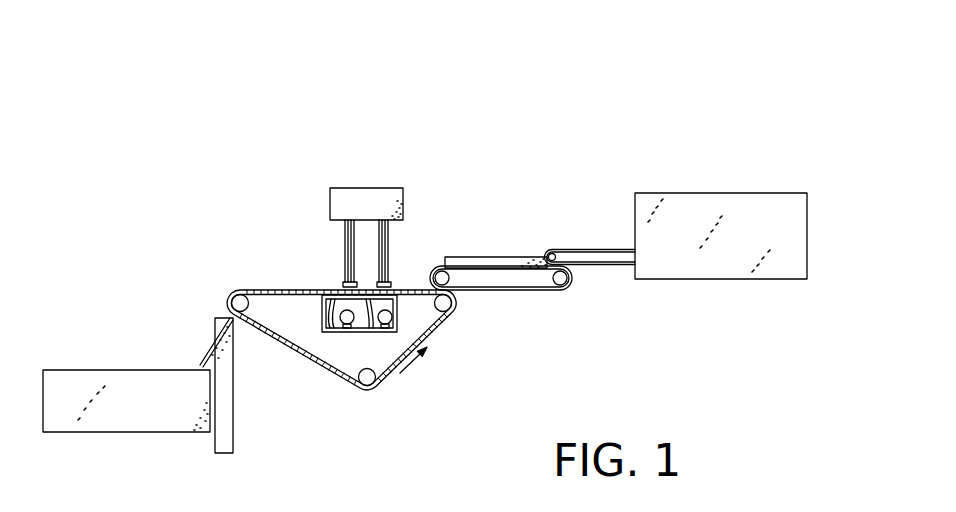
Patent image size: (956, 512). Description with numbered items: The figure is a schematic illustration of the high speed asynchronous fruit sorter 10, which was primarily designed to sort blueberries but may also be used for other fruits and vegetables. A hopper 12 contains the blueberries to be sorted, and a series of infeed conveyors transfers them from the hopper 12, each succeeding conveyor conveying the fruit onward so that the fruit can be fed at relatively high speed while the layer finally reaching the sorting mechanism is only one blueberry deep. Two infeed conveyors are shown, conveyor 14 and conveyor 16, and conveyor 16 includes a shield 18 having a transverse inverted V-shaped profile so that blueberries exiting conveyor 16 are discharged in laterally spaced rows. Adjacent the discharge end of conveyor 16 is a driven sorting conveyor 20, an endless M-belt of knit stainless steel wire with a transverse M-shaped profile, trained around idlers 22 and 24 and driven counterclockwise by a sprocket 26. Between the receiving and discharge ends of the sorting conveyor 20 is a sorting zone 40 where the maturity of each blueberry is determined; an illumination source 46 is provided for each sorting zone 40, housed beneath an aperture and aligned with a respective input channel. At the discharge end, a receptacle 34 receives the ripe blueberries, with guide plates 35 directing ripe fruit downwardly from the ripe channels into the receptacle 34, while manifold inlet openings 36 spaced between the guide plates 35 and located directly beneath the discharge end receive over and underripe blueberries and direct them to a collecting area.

The asynchronous fruit sorter 10 is at (470, 108).
The hopper 12 is at (799, 206).
The infeed conveyor 14 is at (618, 265).
The infeed conveyor 16 is at (532, 290).
The shield 18 is at (490, 257).
The sorting conveyor 20 is at (302, 274).
The idler 22 is at (240, 297).
The idler 24 is at (447, 307).
The sprocket 26 is at (372, 380).
The receptacle 34 is at (153, 423).
The guide plates 35 is at (207, 357).
The manifold inlet openings 36 is at (228, 433).
The sorting zone 40 is at (369, 270).
The illumination source 46 is at (377, 327).